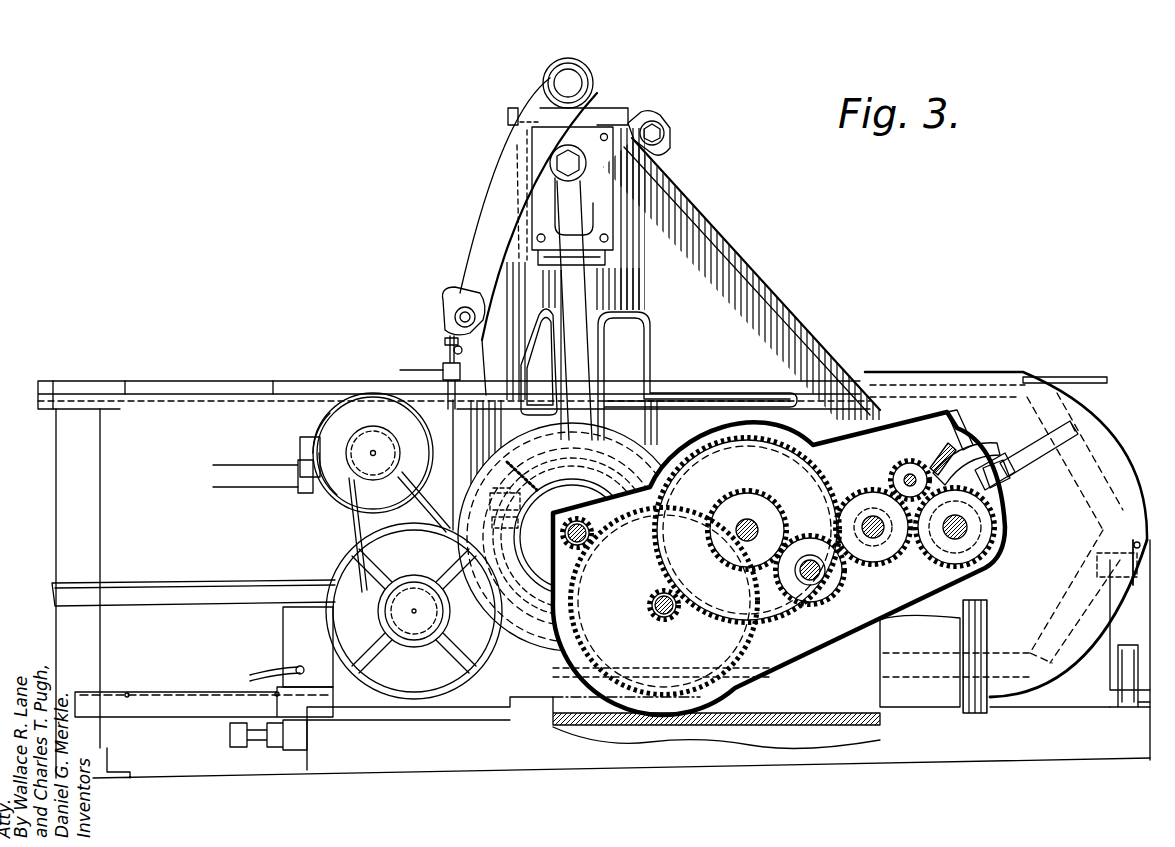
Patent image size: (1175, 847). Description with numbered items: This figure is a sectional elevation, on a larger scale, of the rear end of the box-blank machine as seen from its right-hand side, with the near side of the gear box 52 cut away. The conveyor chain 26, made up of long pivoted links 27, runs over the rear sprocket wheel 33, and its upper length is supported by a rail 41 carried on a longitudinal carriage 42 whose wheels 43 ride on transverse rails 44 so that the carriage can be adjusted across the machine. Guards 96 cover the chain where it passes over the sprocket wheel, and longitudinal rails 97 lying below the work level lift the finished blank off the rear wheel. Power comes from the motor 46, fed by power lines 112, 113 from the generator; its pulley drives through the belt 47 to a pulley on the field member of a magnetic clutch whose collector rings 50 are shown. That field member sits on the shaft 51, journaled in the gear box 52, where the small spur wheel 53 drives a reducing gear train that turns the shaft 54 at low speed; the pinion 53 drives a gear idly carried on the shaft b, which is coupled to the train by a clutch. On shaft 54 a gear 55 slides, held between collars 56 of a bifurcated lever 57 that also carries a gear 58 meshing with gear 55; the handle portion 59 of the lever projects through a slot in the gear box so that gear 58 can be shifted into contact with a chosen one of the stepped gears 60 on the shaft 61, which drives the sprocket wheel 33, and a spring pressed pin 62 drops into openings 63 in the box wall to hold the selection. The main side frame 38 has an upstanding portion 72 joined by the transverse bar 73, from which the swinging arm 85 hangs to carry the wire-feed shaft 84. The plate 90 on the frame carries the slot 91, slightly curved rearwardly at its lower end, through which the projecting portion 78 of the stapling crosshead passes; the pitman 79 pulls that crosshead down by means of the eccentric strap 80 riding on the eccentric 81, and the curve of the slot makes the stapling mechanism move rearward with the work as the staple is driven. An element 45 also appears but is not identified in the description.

The conveyor chain 26 is at (210, 366).
The links 27 is at (148, 385).
The rail 41 is at (185, 401).
The carriage 42 is at (165, 593).
The wheels 43 is at (1130, 643).
The transverse rails 44 is at (1117, 698).
The drum 45 is at (520, 450).
The motor 46 is at (345, 575).
The belt 47 is at (540, 520).
The collector rings 50 is at (560, 565).
The shaft 51 is at (582, 543).
The gear box 52 is at (700, 608).
The small spur wheel 53 is at (705, 538).
The shaft 54 is at (873, 545).
The gear 55 is at (840, 505).
The collars 56 is at (949, 538).
The bifurcated lever 57 is at (938, 460).
The gear 58 is at (895, 470).
The handle portion 59 is at (983, 435).
The gears 60 is at (995, 512).
The shaft 61 is at (967, 530).
The spring pressed pin 62 is at (1075, 425).
The openings 63 is at (1007, 478).
The upstanding portions 72 is at (637, 178).
The transverse bar 73 is at (570, 83).
The projecting portions 78 is at (570, 160).
The pitmen 79 is at (592, 336).
The eccentric straps 80 is at (620, 463).
The eccentrics 81 is at (583, 470).
The transverse shaft 84 is at (454, 311).
The swinging arm 85 is at (492, 193).
The plates 90 is at (608, 190).
The slots 91 is at (596, 212).
The guards 96 is at (1112, 490).
The longitudinal rails 97 is at (1076, 380).
The power line 112 is at (236, 465).
The power line 113 is at (245, 490).
The rear sprocket wheel 33 is at (1113, 452).
The main side frames 38 is at (775, 305).
The shaft b is at (672, 612).